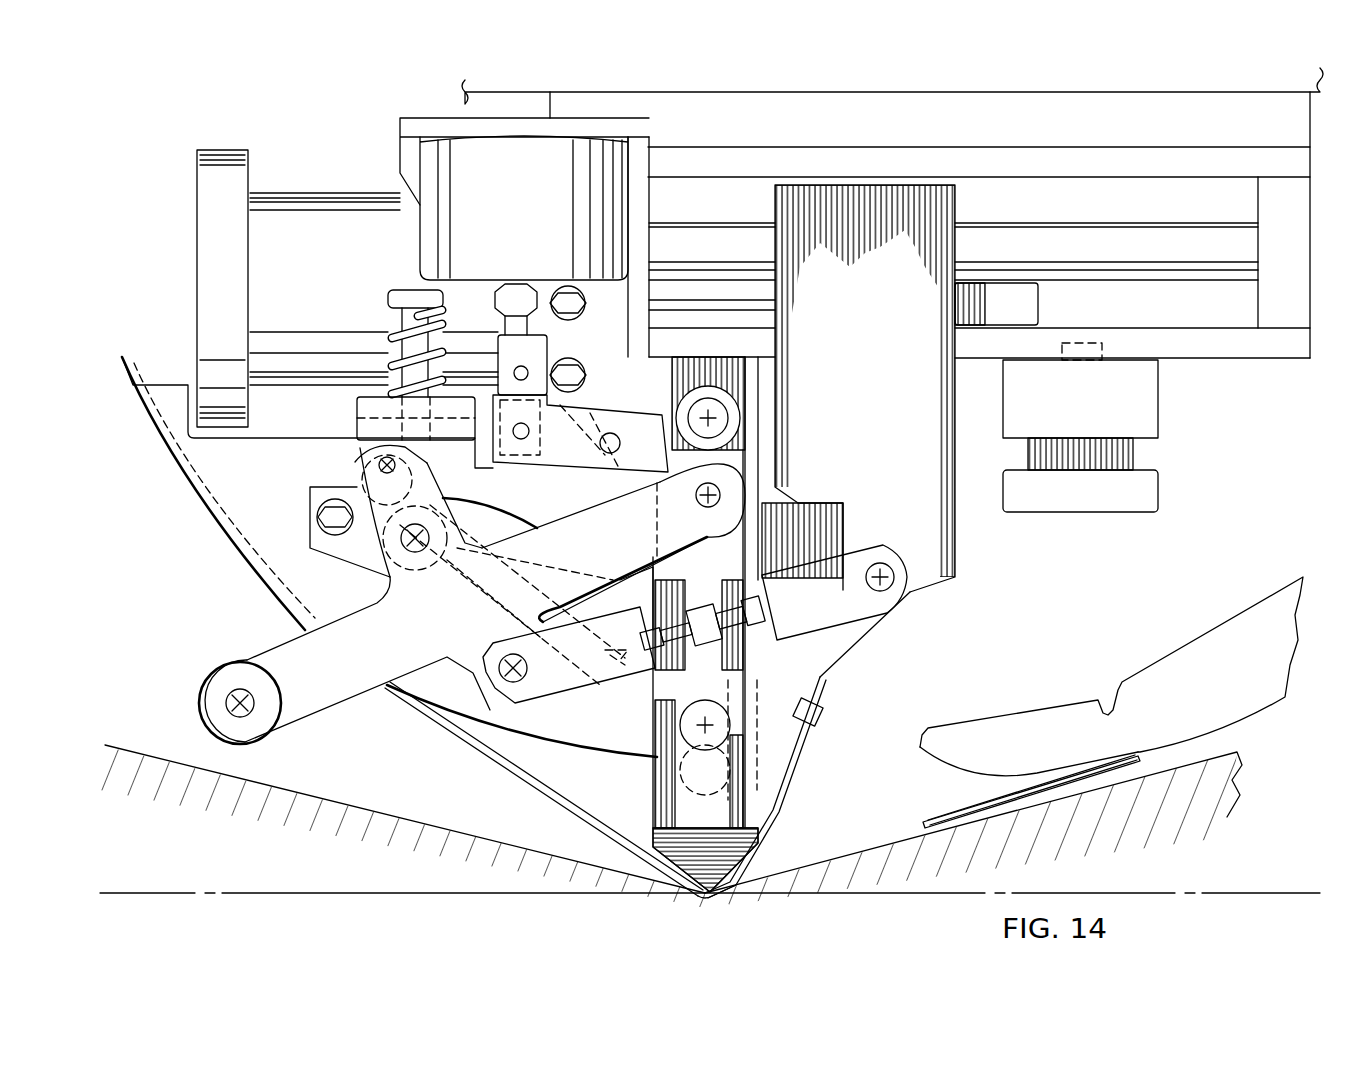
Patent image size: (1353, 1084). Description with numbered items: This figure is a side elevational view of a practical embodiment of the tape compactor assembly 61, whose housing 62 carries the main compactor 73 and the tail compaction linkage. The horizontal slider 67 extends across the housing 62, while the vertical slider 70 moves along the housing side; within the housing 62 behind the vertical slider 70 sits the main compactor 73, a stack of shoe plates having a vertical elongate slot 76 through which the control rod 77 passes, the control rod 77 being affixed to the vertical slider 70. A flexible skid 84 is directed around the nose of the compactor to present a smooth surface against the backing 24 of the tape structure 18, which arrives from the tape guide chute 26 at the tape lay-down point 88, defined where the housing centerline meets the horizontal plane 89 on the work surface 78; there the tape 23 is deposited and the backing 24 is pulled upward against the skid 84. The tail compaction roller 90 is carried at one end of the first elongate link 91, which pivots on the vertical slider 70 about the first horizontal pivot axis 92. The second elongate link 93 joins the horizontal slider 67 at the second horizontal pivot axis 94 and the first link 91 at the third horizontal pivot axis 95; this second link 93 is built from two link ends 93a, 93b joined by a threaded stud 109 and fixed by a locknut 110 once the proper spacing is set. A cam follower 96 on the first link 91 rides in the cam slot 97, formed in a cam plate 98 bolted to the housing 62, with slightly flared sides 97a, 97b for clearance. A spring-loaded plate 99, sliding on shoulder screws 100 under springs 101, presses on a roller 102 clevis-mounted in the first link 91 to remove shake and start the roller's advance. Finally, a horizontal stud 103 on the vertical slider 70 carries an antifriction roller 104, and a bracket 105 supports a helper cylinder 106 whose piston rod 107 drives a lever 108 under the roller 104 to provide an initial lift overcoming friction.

The tape structure 18 is at (1033, 795).
The tape 23 is at (974, 822).
The backing 24 is at (962, 802).
The tape guide chute 26 is at (1061, 747).
The tape compactor assembly 61 is at (210, 542).
The housing 62 is at (256, 500).
The horizontal slider 67 is at (876, 311).
The vertical slider 70 is at (755, 470).
The main compactor 73 is at (653, 836).
The vertical elongate slot 76 is at (760, 792).
The control rod 77 is at (733, 716).
The work surface 78 is at (462, 829).
The skid 84 is at (561, 779).
The tape lay-down point 88 is at (706, 900).
The horizontal plane 89 is at (1083, 893).
The roller 90 is at (204, 688).
The first elongate link 91 is at (320, 717).
The first horizontal pivot axis 92 is at (702, 500).
The second elongate link 93 is at (875, 621).
The link end 93a is at (888, 676).
The link end 93b is at (526, 708).
The second horizontal pivot axis 94 is at (869, 580).
The third horizontal pivot axis 95 is at (528, 668).
The cam follower 96 is at (492, 566).
The cam slot 97 is at (577, 559).
The cam slot side 97a is at (635, 711).
The cam slot side 97b is at (612, 583).
The cam plate 98 is at (343, 565).
The spring-loaded plate 99 is at (357, 405).
The shoulder screws 100 is at (408, 288).
The springs 101 is at (390, 320).
The roller 102 is at (375, 465).
The horizontal stud 103 is at (736, 405).
The antifriction roller 104 is at (724, 418).
The bracket 105 is at (400, 140).
The helper cylinder 106 is at (420, 165).
The piston rod 107 is at (543, 316).
The lever 108 is at (586, 418).
The stud 109 is at (735, 640).
The locknut 110 is at (758, 585).